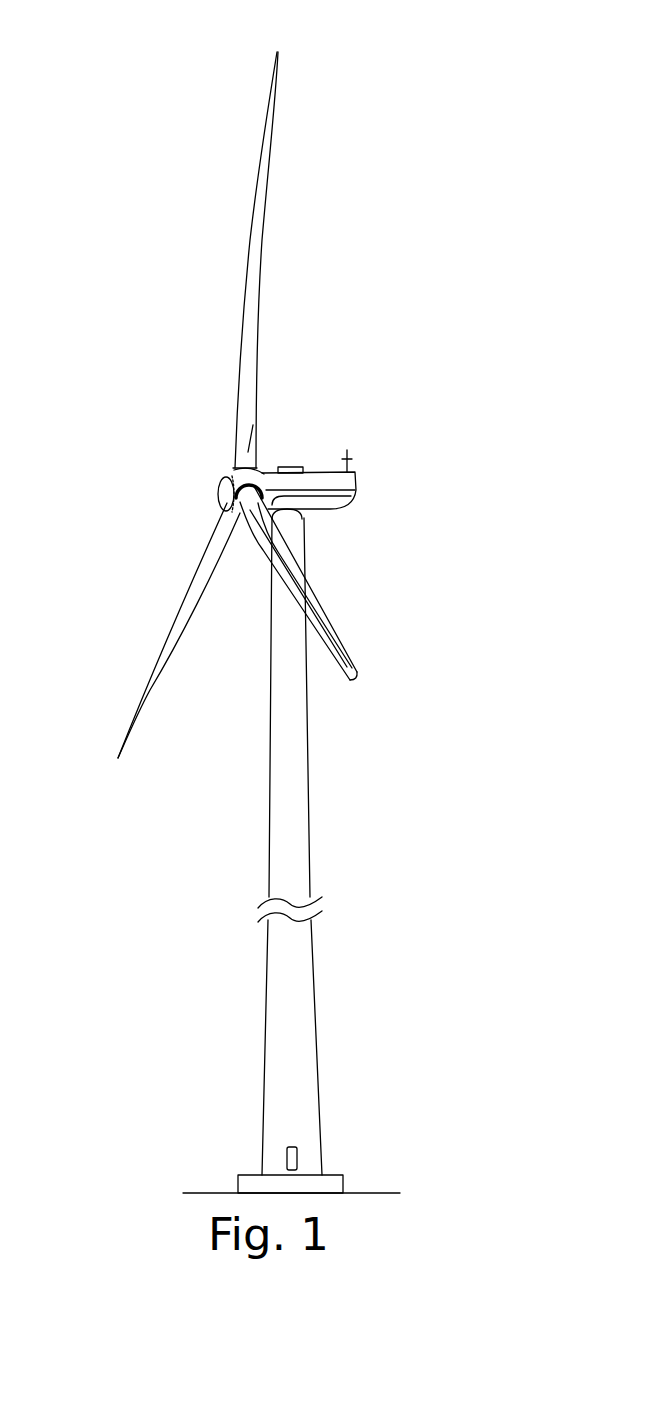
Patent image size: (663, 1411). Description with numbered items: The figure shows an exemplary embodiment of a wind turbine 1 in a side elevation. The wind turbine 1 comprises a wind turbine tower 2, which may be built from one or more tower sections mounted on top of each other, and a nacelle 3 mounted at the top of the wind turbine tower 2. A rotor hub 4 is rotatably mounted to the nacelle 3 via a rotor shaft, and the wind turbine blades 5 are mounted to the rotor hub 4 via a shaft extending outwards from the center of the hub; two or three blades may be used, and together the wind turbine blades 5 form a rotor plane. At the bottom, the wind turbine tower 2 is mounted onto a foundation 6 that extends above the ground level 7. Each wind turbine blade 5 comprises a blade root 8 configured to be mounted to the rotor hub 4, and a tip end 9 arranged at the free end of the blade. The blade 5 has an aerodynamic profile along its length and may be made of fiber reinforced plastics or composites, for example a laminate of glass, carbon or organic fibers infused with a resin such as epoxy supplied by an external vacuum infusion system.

The wind turbine 1 is at (461, 331).
The wind turbine tower 2 is at (303, 868).
The nacelle 3 is at (302, 480).
The rotor hub 4 is at (240, 470).
The wind turbine blade 5 is at (250, 362).
The foundation 6 is at (330, 1183).
The ground level 7 is at (395, 1190).
The blade root 8 is at (214, 505).
The tip end 9 is at (111, 767).